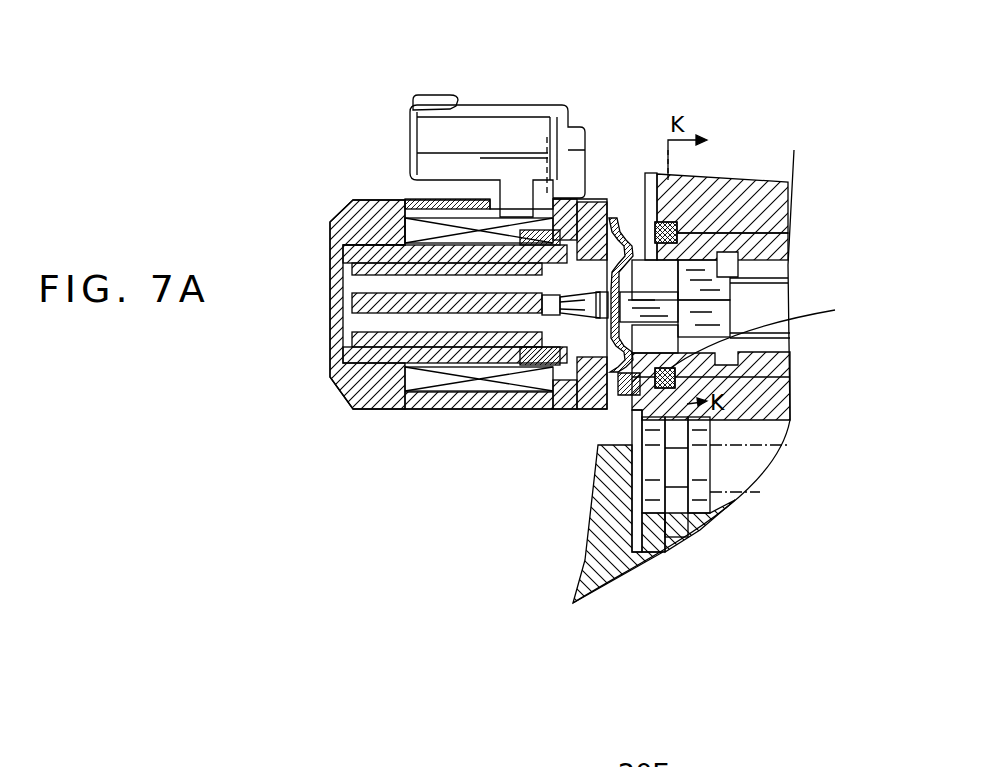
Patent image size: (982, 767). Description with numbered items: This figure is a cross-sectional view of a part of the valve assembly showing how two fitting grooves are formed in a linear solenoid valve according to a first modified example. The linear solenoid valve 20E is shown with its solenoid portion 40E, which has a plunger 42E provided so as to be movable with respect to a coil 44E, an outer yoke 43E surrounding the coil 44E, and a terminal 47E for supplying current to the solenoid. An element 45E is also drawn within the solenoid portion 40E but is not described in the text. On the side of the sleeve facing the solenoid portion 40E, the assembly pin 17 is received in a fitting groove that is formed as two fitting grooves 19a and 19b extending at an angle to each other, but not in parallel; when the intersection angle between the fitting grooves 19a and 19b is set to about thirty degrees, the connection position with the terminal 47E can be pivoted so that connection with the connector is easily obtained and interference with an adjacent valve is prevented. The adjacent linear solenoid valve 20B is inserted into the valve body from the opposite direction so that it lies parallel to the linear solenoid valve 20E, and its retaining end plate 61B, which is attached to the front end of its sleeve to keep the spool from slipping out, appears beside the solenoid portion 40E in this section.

The assembly pin 17 is at (674, 230).
The fitting groove 19a is at (692, 268).
The fitting groove 19b is at (700, 338).
The linear solenoid valve 20B is at (768, 484).
The linear solenoid valve 20E is at (792, 250).
The solenoid portion 40E is at (536, 104).
The plunger 42E is at (380, 262).
The outer yoke 43E is at (343, 392).
The coil 44E is at (477, 380).
The bobbin 45E is at (400, 370).
The terminal 47E is at (477, 108).
The retaining end plate 61B is at (650, 503).